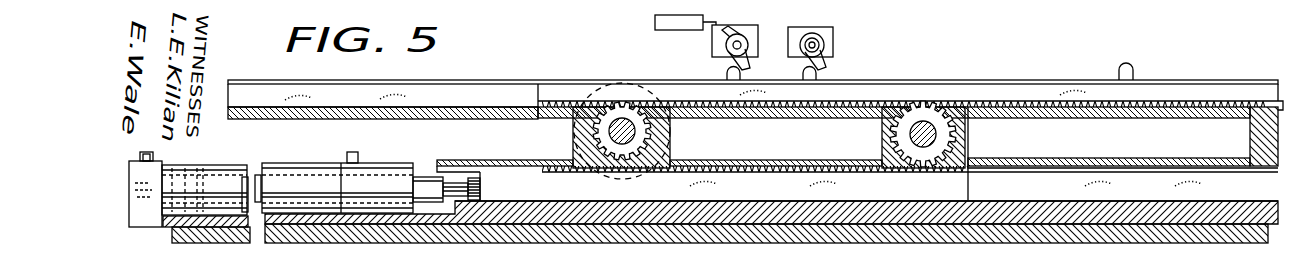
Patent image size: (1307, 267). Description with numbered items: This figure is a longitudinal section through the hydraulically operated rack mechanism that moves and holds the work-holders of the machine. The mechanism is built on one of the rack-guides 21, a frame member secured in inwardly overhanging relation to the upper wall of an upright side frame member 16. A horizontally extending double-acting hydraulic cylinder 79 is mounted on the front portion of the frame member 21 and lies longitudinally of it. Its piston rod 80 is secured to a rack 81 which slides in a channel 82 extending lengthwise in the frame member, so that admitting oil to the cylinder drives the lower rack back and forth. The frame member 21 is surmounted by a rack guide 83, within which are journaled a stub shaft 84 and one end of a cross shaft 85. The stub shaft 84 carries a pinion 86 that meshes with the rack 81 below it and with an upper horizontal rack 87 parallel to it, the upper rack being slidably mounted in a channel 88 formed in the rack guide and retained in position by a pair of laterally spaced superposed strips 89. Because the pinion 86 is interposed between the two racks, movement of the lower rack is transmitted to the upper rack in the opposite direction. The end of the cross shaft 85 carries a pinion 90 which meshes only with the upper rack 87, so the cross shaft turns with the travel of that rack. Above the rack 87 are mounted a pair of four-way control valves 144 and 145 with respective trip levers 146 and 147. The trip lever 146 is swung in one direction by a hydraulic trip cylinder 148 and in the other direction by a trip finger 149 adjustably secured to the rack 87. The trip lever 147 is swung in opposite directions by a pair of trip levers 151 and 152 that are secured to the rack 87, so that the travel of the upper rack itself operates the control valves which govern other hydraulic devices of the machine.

The side frame member 16 is at (226, 266).
The rack-guide 21 is at (1242, 213).
The double-acting hydraulic cylinder 79 is at (293, 175).
The piston rod 80 is at (458, 186).
The rack 81 is at (762, 180).
The channel 82 is at (712, 203).
The rack guide 83 is at (395, 113).
The stub shaft 84 is at (932, 135).
The cross shaft 85 is at (610, 131).
The pinion 86 is at (890, 135).
The upper horizontal rack 87 is at (1009, 88).
The channel 88 is at (465, 98).
The strip 89 is at (510, 83).
The pinion 90 is at (663, 133).
The four-way control valve 144 is at (715, 43).
The four-way control valve 145 is at (835, 32).
The trip lever 146 is at (750, 68).
The trip lever 147 is at (827, 65).
The hydraulic trip cylinder 148 is at (655, 26).
The trip finger 149 is at (727, 72).
The trip lever 151 is at (1125, 72).
The trip lever 152 is at (803, 73).